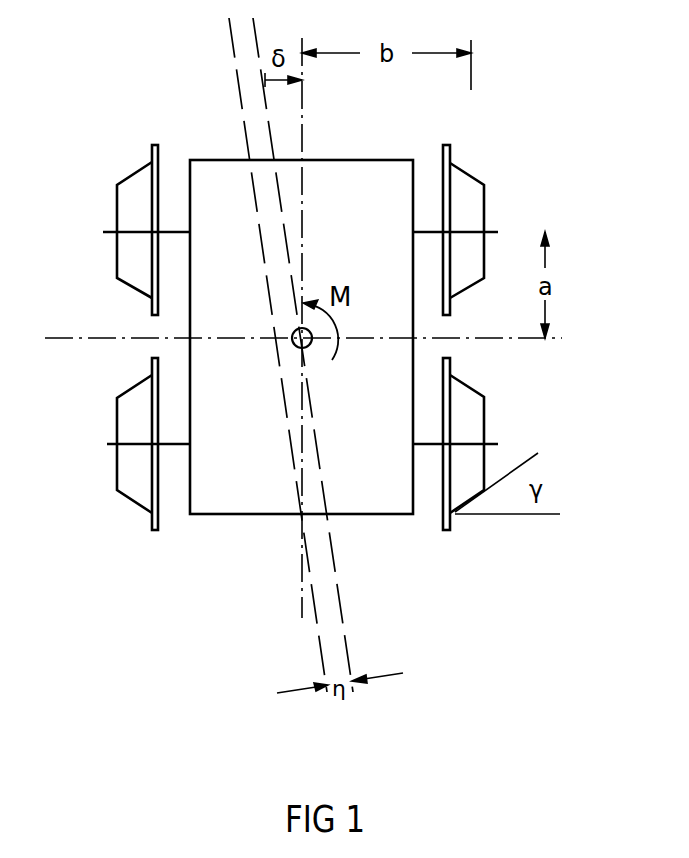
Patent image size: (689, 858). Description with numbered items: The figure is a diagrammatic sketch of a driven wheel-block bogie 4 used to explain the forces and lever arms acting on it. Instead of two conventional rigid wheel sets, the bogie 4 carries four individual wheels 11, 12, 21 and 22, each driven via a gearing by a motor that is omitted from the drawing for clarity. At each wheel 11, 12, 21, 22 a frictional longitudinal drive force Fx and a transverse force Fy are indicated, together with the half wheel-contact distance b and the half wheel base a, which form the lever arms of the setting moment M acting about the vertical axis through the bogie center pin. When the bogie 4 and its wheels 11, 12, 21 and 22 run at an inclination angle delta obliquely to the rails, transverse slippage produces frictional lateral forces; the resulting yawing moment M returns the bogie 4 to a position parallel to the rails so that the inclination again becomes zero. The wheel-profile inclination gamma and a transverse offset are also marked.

The bogie 4 is at (240, 516).
The individual wheel 11 is at (130, 120).
The individual wheel 12 is at (471, 120).
The individual wheel 21 is at (130, 334).
The individual wheel 22 is at (471, 334).